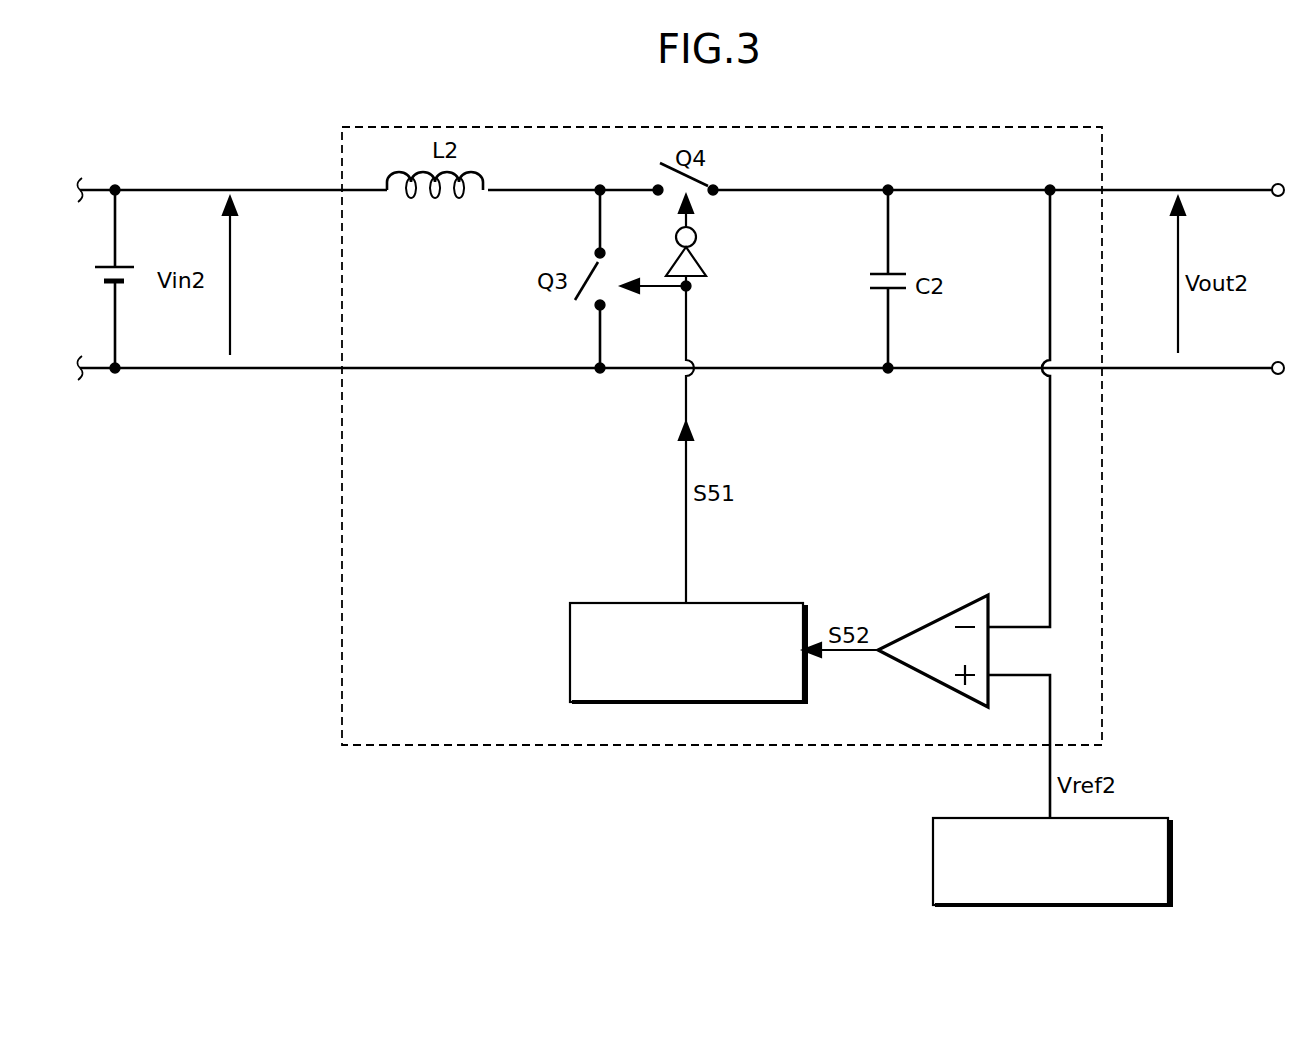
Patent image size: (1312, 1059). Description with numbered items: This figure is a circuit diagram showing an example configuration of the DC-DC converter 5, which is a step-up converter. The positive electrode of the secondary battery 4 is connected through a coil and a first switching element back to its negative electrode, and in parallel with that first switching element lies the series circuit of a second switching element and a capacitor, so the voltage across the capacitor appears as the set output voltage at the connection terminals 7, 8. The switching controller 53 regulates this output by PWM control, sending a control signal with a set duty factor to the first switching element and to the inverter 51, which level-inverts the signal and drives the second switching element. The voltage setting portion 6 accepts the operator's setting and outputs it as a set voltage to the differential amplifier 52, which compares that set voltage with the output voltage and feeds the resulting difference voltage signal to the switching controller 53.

The secondary battery 4 is at (119, 267).
The DC-DC converter 5 is at (1060, 127).
The voltage setting portion 6 is at (933, 852).
The connection terminal 7 is at (1279, 184).
The connection terminal 8 is at (1279, 375).
The inverter 51 is at (697, 258).
The differential amplifier 52 is at (946, 612).
The switching controller 53 is at (570, 660).